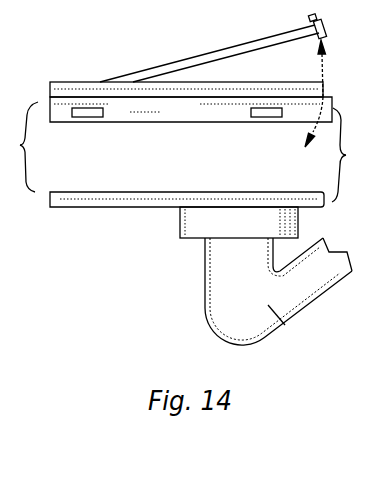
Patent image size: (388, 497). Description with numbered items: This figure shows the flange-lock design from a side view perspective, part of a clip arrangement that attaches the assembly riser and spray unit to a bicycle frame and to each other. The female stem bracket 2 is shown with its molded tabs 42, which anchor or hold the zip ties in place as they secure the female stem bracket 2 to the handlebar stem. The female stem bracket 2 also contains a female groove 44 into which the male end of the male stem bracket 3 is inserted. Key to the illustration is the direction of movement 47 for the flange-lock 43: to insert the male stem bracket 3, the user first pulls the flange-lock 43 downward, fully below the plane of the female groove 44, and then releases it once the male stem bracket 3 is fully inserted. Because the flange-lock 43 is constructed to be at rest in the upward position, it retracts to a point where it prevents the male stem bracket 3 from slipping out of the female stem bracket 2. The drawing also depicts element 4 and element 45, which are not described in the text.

The female stem bracket 2 is at (147, 110).
The male stem bracket 3 is at (75, 199).
The drain trap pipe 4 is at (284, 323).
The tabs 42 is at (103, 118).
The flange-lock 43 is at (187, 59).
The female groove 44 is at (73, 86).
The connector block 45 is at (179, 222).
The direction of movement 47 is at (322, 62).